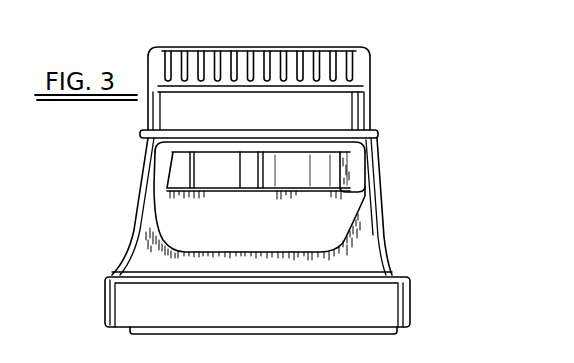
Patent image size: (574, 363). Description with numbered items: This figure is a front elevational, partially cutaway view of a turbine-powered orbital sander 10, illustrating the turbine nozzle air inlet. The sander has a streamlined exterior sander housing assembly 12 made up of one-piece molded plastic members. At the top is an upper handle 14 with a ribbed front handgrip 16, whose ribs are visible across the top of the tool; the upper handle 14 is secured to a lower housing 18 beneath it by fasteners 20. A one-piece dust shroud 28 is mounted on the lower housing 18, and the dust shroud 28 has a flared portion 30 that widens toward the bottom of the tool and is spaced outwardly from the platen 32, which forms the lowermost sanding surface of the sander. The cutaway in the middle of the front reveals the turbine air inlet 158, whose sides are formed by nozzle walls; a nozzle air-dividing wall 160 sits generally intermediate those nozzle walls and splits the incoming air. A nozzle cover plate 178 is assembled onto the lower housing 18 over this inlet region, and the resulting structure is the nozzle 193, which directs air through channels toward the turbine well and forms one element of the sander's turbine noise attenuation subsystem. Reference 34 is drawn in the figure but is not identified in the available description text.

The turbine-powered orbital sander 10 is at (433, 105).
The exterior sander housing assembly 12 is at (375, 118).
The upper handle 14 is at (146, 107).
The ribbed front handgrip 16 is at (247, 46).
The lower housing 18 is at (180, 217).
The fasteners 20 is at (311, 6).
The dust shroud 28 is at (385, 218).
The flared portion 30 is at (112, 273).
The platen 32 is at (132, 329).
The base foot 34 is at (398, 332).
The turbine air inlet 158 is at (208, 162).
The nozzle air-dividing wall 160 is at (250, 172).
The nozzle cover plate 178 is at (377, 146).
The nozzle 193 is at (383, 192).